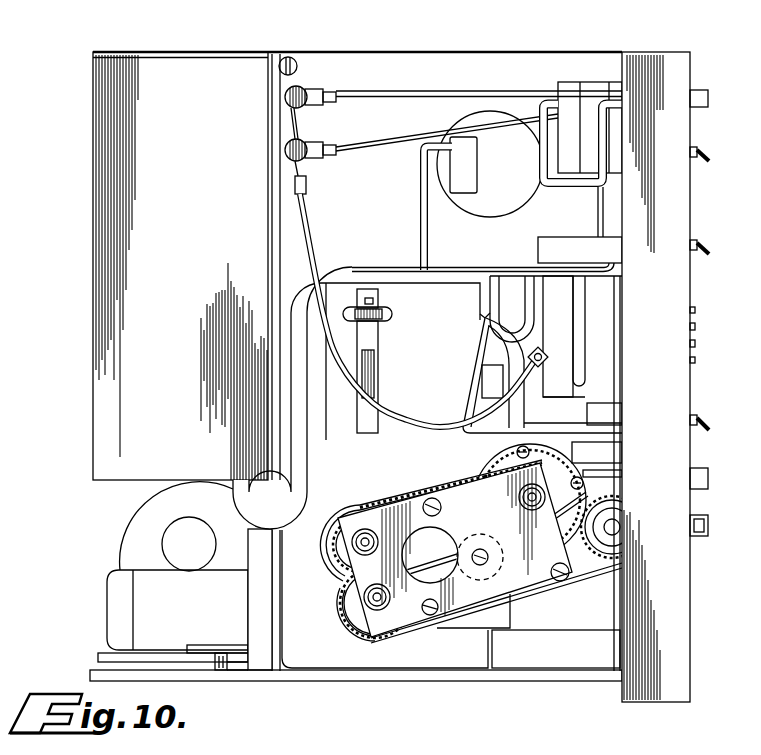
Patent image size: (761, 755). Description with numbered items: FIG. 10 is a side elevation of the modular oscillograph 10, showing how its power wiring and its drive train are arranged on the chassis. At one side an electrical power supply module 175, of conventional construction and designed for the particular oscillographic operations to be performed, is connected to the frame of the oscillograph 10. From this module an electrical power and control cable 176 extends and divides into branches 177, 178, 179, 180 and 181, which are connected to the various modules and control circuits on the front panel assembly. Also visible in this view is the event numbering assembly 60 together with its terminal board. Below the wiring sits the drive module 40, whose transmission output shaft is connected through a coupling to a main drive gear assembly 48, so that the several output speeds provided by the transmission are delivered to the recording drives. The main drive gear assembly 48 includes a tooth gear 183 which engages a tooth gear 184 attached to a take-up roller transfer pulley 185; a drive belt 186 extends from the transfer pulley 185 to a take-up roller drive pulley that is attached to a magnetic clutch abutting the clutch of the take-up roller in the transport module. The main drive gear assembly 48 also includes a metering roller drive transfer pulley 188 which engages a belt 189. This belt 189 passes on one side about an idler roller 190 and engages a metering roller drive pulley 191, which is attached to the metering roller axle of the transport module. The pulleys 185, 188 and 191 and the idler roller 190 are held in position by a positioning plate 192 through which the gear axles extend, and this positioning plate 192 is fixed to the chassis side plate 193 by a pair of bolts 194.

The unit 10 is at (468, 145).
The drive and transmission module 40 is at (98, 543).
The main drive gear assembly 48 is at (347, 620).
The event numbering assembly 60 is at (515, 133).
The electrical power supply module 175 is at (138, 213).
The electrical power and control cable 176 is at (305, 479).
The branch 177 is at (417, 201).
The branch 178 is at (507, 267).
The branch 179 is at (533, 312).
The branch 180 is at (481, 322).
The branch 181 is at (462, 350).
The tooth gear 183 is at (350, 600).
The tooth gear 184 is at (352, 573).
The take-up roller transfer pulley 185 is at (338, 563).
The drive belt 186 is at (425, 490).
The metering roller drive transfer pulley 188 is at (347, 612).
The belt 189 is at (590, 582).
The idler roller 190 is at (487, 533).
The metering roller drive pulley 191 is at (615, 563).
The positioning plate 192 is at (524, 590).
The chassis side plate 193 is at (428, 65).
The bolts 194 is at (433, 505).